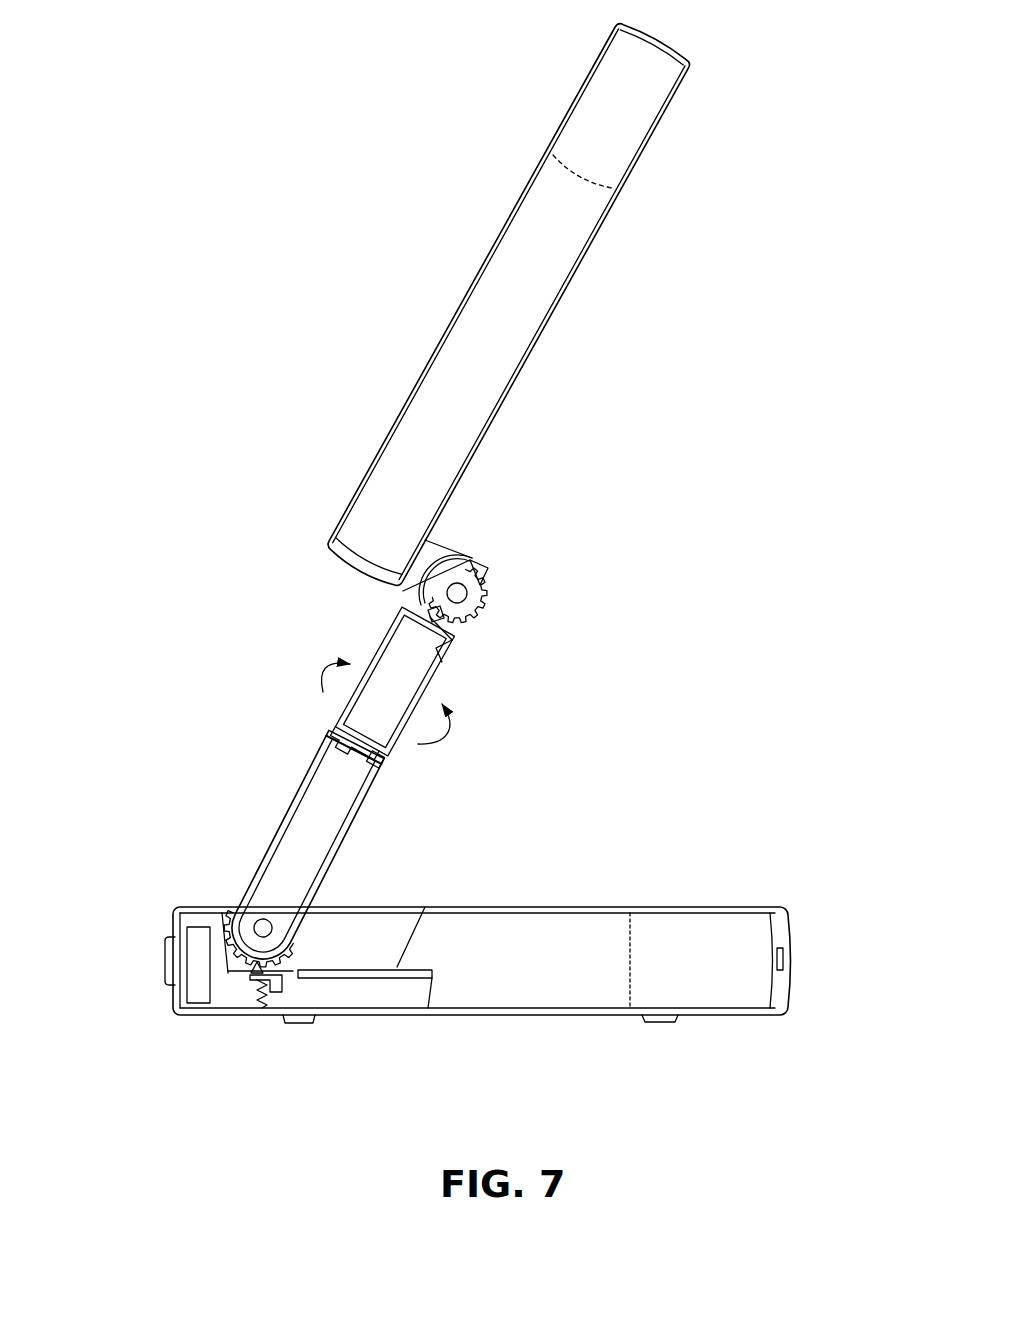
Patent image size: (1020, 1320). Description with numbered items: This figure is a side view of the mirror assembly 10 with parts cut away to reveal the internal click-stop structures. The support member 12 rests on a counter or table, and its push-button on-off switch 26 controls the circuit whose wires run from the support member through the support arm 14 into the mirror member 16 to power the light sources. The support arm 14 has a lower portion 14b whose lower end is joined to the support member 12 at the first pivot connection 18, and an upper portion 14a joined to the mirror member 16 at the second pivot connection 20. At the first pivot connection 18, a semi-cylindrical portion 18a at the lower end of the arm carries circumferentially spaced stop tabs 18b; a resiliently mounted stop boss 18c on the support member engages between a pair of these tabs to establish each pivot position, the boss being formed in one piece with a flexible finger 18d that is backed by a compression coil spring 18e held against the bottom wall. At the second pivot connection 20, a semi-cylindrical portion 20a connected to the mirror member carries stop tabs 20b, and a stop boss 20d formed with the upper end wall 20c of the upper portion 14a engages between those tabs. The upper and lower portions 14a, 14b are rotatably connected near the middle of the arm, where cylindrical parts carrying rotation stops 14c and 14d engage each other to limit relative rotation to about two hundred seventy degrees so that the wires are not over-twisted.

The mirror assembly 10 is at (637, 497).
The support member 12 is at (692, 905).
The support arm 14 is at (265, 813).
The upper portion 14a is at (390, 647).
The lower portion 14b is at (358, 805).
The rotation stop 14c is at (343, 735).
The rotation stop 14d is at (382, 753).
The mirror member 16 is at (437, 290).
The first pivot connection 18 is at (302, 933).
The semi-cylindrical portion 18a is at (230, 927).
The stop tabs 18b is at (245, 960).
The stop boss 18c is at (257, 968).
The flexible finger 18d is at (273, 978).
The compression coil spring 18e is at (265, 1003).
The second pivot connection 20 is at (481, 553).
The semi-cylindrical portion 20a is at (477, 602).
The stop tabs 20b is at (486, 577).
The upper end wall 20c is at (432, 655).
The stop boss 20d is at (447, 633).
The switch 26 is at (167, 987).